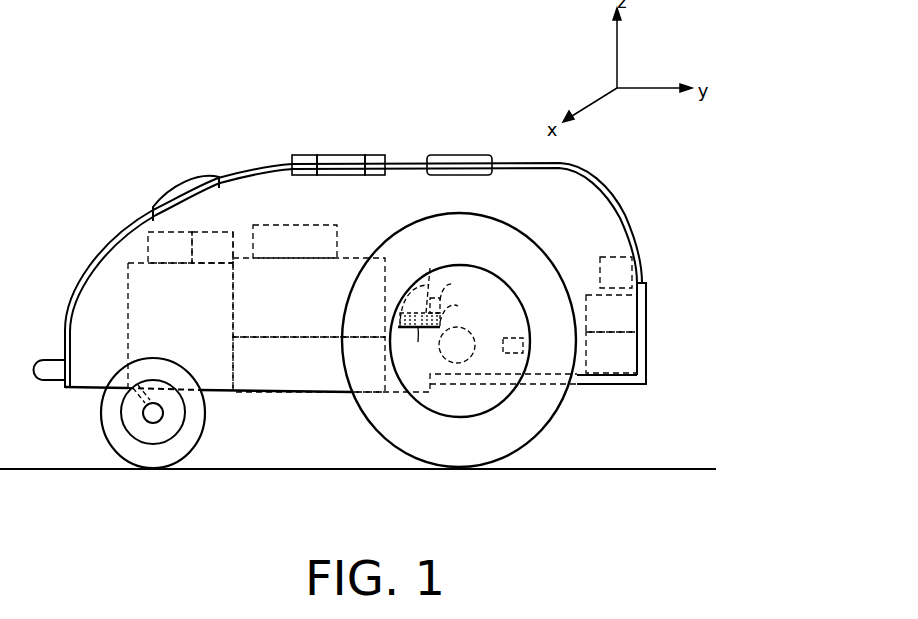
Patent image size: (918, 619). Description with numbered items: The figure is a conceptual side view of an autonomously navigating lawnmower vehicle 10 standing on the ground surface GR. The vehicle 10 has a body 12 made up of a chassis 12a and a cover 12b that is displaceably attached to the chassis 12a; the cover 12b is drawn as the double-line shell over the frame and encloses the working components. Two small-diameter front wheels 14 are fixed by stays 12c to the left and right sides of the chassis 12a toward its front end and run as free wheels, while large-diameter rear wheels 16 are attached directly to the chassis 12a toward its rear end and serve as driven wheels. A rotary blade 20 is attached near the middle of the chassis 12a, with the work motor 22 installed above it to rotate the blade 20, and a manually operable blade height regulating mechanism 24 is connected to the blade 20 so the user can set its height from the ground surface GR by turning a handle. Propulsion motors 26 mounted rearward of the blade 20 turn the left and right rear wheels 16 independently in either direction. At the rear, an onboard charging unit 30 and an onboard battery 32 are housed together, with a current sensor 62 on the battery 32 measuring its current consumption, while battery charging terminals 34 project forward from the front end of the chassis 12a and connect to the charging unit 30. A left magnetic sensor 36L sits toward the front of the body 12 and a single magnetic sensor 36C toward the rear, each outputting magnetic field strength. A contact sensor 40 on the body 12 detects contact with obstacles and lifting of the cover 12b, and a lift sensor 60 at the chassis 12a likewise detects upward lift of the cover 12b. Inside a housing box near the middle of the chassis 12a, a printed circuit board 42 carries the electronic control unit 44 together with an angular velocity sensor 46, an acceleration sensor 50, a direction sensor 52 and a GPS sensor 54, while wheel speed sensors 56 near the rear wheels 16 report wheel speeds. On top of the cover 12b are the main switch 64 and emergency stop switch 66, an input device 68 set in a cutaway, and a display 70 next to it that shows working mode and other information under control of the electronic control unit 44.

The autonomously navigating vehicle 10 is at (600, 164).
The body 12 is at (672, 333).
The chassis 12a is at (650, 379).
The cover 12b is at (643, 270).
The stays 12c is at (133, 412).
The front wheels 14 is at (107, 443).
The rear wheels 16 is at (365, 422).
The blade 20 is at (293, 369).
The work motor 22 is at (293, 307).
The blade height regulating mechanism 24 is at (283, 253).
The propulsion motors 26 is at (468, 328).
The onboard charging unit 30 is at (600, 325).
The onboard battery 32 is at (600, 363).
The battery charging terminals 34 is at (55, 358).
The left magnetic sensor 36L is at (182, 202).
The magnetic sensor 36C is at (467, 156).
The contact sensor 40 is at (158, 258).
The printed circuit board 42 is at (419, 348).
The electronic control unit 44 is at (398, 310).
The angular velocity sensor 46 is at (405, 312).
The acceleration sensor 50 is at (434, 279).
The direction sensor 52 is at (454, 292).
The GPS sensor 54 is at (461, 308).
The wheel speed sensors 56 is at (523, 336).
The lift sensor 60 is at (201, 258).
The current sensor 62 is at (604, 283).
The main switch 64 is at (306, 142).
The emergency stop switch 66 is at (305, 155).
The input device 68 is at (375, 156).
The display 70 is at (348, 156).
The ground surface GR is at (587, 468).